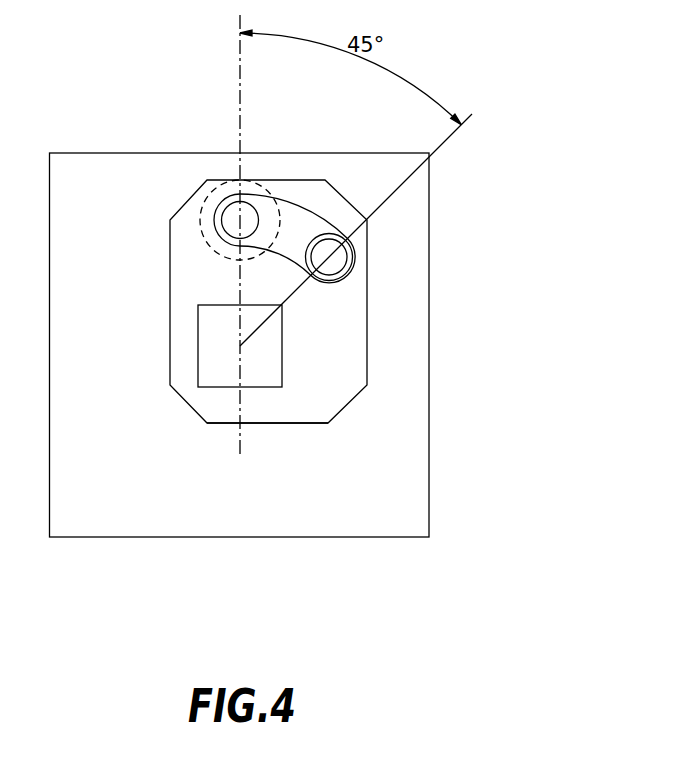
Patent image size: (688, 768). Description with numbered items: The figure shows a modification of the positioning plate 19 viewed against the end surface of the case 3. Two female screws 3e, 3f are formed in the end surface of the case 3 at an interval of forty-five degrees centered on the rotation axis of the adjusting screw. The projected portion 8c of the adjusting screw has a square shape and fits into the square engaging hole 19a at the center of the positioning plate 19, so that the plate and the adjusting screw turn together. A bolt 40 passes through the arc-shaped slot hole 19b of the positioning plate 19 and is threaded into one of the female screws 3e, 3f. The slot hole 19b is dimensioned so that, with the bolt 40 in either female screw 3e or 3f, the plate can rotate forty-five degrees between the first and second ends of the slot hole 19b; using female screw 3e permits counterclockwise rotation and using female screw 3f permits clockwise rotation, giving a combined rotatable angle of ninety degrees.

The case 3 is at (429, 455).
The female screw 3e is at (220, 203).
The female screw 3f is at (313, 237).
The projected portion 8c is at (219, 377).
The positioning plate 19 is at (333, 413).
The engaging hole 19a is at (255, 375).
The slot hole 19b is at (288, 205).
The bolt 40 is at (195, 213).